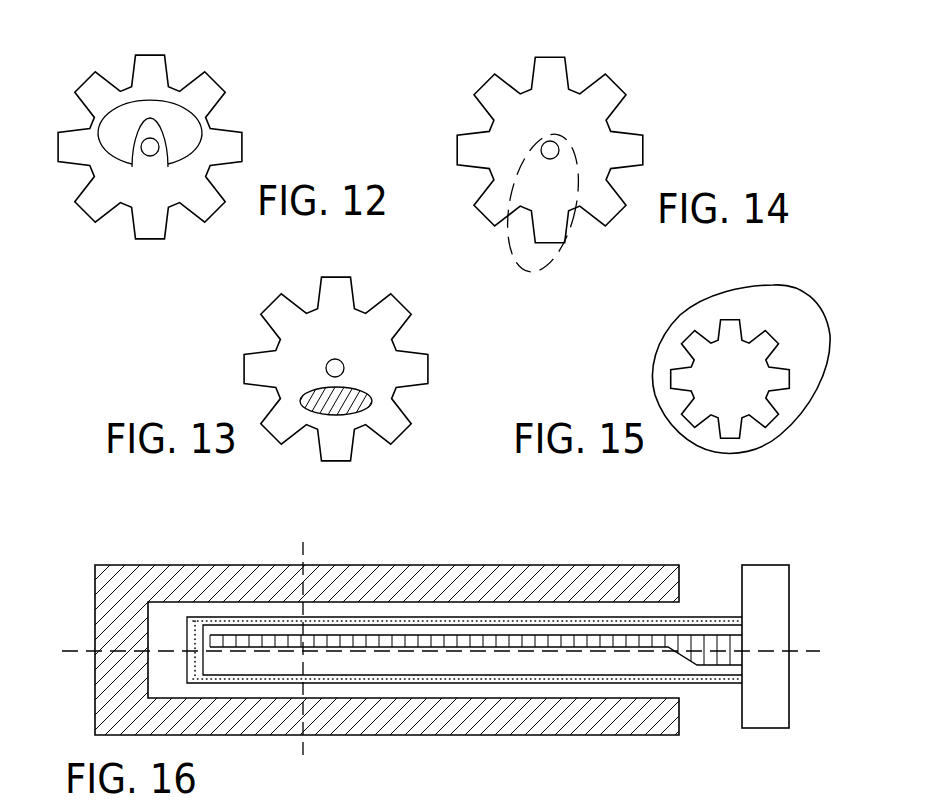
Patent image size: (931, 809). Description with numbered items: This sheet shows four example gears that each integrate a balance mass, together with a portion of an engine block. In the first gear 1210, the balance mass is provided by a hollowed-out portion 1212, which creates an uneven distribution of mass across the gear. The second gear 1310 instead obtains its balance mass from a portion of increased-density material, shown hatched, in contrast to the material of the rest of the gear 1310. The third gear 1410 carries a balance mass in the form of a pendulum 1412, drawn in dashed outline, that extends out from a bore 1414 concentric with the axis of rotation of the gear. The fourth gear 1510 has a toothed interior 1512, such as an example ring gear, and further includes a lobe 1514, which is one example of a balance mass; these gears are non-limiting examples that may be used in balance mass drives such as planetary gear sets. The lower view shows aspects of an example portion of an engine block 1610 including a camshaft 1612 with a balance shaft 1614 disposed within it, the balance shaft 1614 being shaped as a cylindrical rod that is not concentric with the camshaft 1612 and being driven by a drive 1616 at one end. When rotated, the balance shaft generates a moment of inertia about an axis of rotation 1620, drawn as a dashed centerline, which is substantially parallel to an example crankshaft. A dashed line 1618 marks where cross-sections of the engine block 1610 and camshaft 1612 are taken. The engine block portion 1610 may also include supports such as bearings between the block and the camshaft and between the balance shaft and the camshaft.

In FIG. 12, the gear 1210 is at (224, 82).
In FIG. 12, the hollowed-out portion 1212 is at (100, 127).
In FIG. 13, the gear 1310 is at (266, 309).
In FIG. 14, the gear 1410 is at (483, 83).
In FIG. 14, the pendulum 1412 is at (570, 247).
In FIG. 14, the bore 1414 is at (557, 143).
In FIG. 15, the gear 1510 is at (731, 354).
In FIG. 15, the toothed interior 1512 is at (710, 413).
In FIG. 15, the lobe 1514 is at (787, 283).
In FIG. 16, the engine block 1610 is at (468, 564).
In FIG. 16, the camshaft 1612 is at (679, 615).
In FIG. 16, the balance shaft 1614 is at (686, 659).
In FIG. 16, the drive 1616 is at (789, 628).
In FIG. 16, the line 1618 is at (304, 556).
In FIG. 16, the axis of rotation 1620 is at (67, 645).